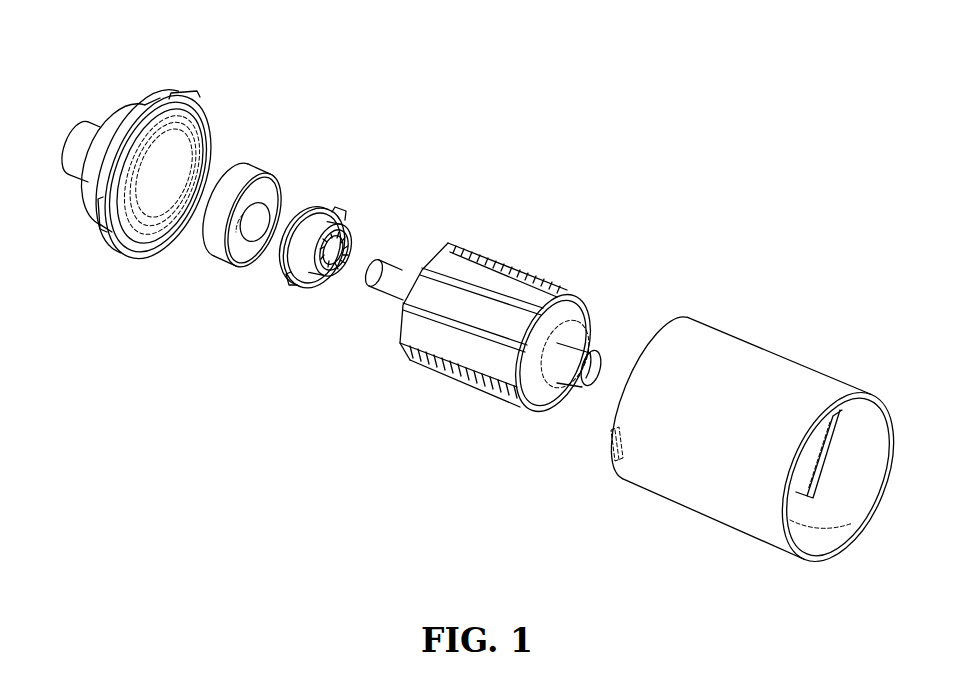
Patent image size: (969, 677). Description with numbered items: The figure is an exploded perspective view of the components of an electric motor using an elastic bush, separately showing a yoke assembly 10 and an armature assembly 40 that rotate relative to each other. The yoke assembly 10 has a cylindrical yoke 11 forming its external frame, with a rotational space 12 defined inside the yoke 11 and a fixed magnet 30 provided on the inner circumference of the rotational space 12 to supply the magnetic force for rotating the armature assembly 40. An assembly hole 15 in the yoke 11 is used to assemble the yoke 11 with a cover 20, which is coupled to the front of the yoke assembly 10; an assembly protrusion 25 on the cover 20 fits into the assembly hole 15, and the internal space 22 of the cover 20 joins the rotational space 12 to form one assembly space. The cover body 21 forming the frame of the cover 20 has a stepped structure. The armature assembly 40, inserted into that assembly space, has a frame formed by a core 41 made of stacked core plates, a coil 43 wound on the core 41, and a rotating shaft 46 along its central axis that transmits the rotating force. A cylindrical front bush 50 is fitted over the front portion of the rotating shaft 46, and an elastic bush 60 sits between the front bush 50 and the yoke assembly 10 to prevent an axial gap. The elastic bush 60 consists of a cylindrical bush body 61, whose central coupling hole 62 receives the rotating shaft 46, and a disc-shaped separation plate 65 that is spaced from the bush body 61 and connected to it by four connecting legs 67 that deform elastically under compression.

The yoke assembly 10 is at (737, 439).
The yoke 11 is at (698, 498).
The rotational space 12 is at (828, 541).
The assembly hole 15 is at (612, 462).
The cover 20 is at (156, 168).
The cover body 21 is at (92, 190).
The internal space 22 is at (147, 238).
The assembly protrusion 25 is at (188, 98).
The fixed magnet 30 is at (838, 480).
The armature assembly 40 is at (514, 336).
The core 41 is at (474, 270).
The coil 43 is at (535, 390).
The rotating shaft 46 is at (592, 343).
The front bush 50 is at (268, 172).
The elastic bush 60 is at (322, 247).
The bush body 61 is at (307, 294).
The coupling hole 62 is at (332, 282).
The separation plate 65 is at (282, 268).
The connecting leg 67 is at (337, 205).